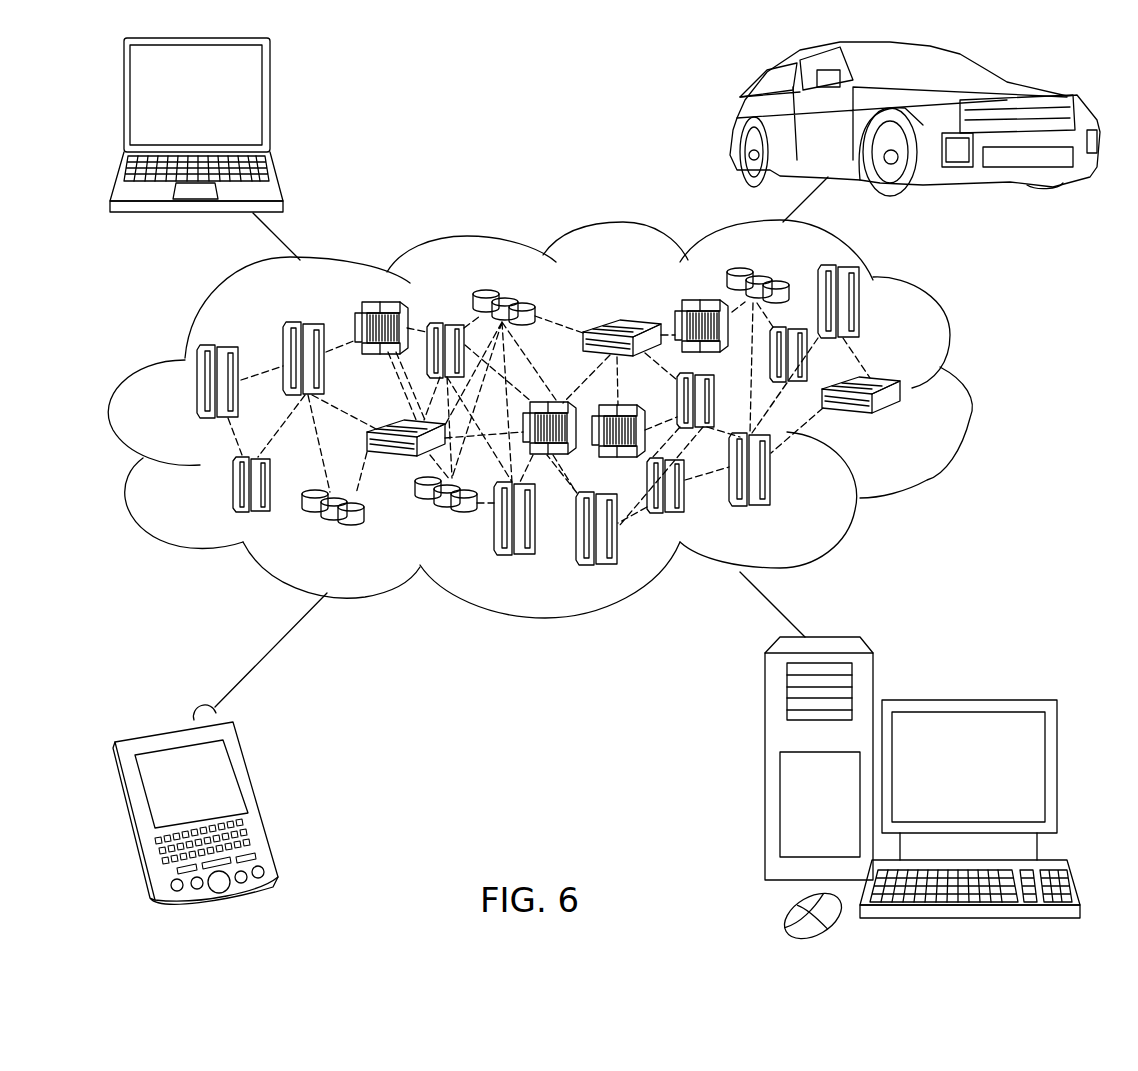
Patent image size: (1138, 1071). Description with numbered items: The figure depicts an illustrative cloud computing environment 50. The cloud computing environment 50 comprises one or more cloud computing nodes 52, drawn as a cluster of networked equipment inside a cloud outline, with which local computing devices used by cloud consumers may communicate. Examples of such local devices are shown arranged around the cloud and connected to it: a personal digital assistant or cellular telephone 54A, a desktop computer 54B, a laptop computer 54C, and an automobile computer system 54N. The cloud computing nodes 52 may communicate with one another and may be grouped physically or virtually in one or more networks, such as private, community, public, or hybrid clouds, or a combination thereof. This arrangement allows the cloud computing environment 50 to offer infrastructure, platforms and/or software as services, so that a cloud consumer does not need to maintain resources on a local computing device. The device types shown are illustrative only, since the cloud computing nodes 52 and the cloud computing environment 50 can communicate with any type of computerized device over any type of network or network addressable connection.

The cloud computing environment 50 is at (967, 393).
The cloud computing nodes 52 is at (905, 425).
The personal digital assistant or cellular telephone 54A is at (260, 798).
The desktop computer 54B is at (965, 700).
The laptop computer 54C is at (270, 102).
The automobile computer system 54N is at (737, 120).